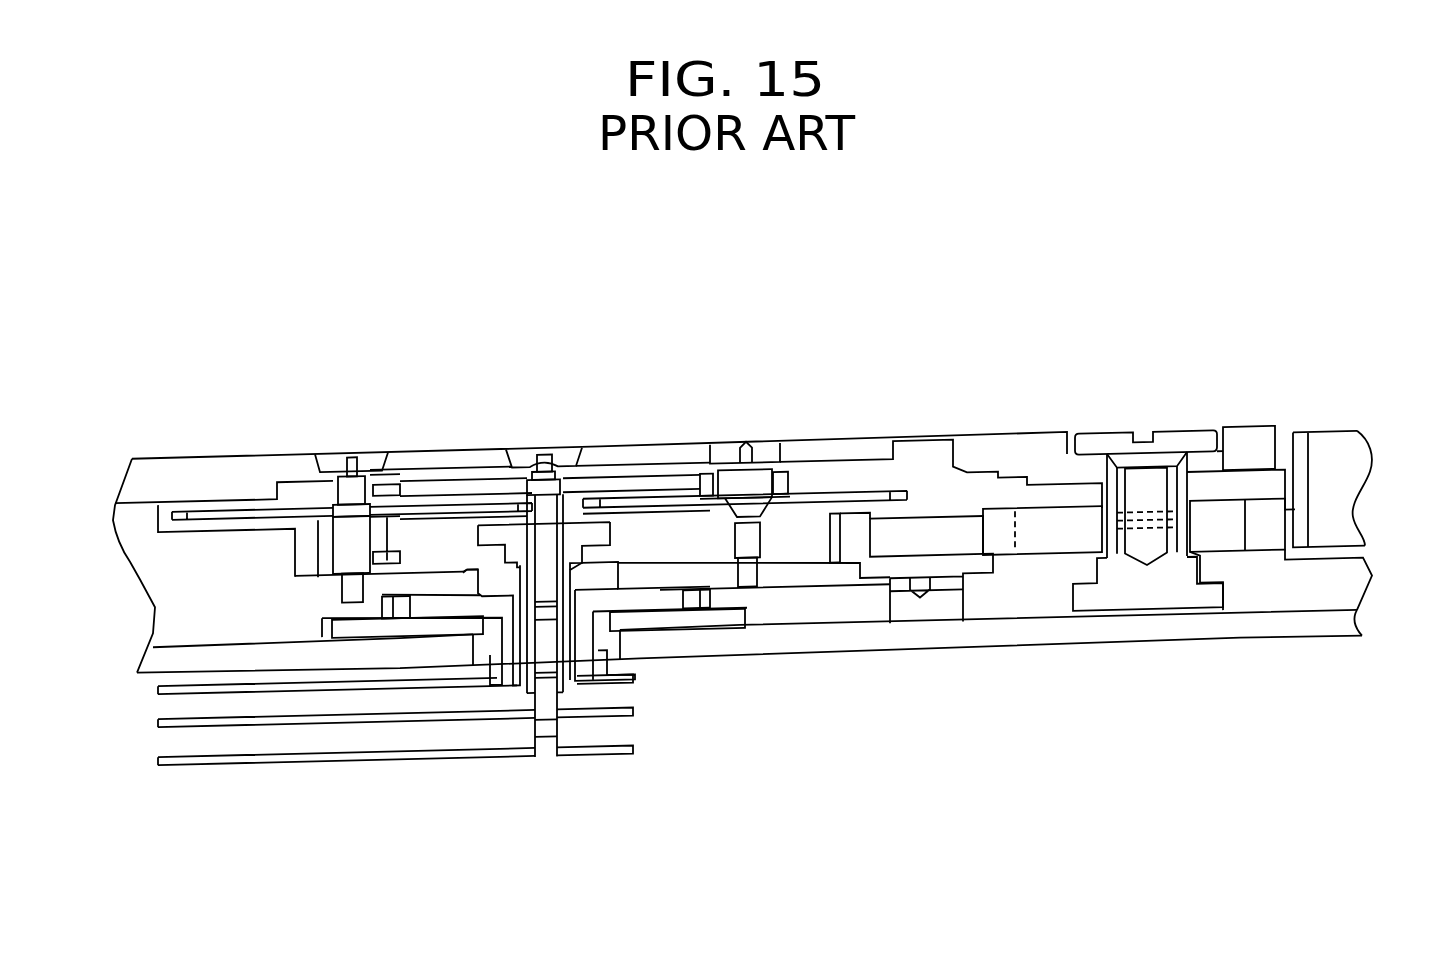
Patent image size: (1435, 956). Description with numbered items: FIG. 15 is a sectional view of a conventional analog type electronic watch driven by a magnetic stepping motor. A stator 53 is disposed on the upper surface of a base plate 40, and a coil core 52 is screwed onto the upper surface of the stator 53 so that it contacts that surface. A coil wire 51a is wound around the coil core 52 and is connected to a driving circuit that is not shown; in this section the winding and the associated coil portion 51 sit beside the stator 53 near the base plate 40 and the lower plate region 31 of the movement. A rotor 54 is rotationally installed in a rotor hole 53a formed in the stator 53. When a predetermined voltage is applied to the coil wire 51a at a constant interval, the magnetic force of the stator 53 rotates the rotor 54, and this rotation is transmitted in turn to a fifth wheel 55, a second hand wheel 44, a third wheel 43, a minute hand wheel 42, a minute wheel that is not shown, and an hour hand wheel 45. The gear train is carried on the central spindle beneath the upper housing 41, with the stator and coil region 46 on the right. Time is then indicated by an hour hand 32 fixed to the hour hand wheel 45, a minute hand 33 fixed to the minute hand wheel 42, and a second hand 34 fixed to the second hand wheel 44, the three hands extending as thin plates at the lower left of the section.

The base plate 31 is at (1223, 632).
The hour hand 32 is at (160, 690).
The minute hand 33 is at (163, 725).
The second hand 34 is at (165, 765).
The base plate 40 is at (1035, 602).
The housing 41 is at (183, 472).
The minute hand wheel 42 is at (423, 553).
The third wheel 43 is at (287, 490).
The second hand wheel 44 is at (598, 485).
The hour hand wheel 45 is at (662, 603).
The coil 46 is at (727, 613).
The arm 51 is at (1343, 450).
The coil wire 51a is at (1350, 427).
The coil core 52 is at (1257, 483).
The stator 53 is at (1038, 523).
The rotor hole 53a is at (852, 525).
The rotor 54 is at (953, 533).
The fifth wheel 55 is at (818, 490).